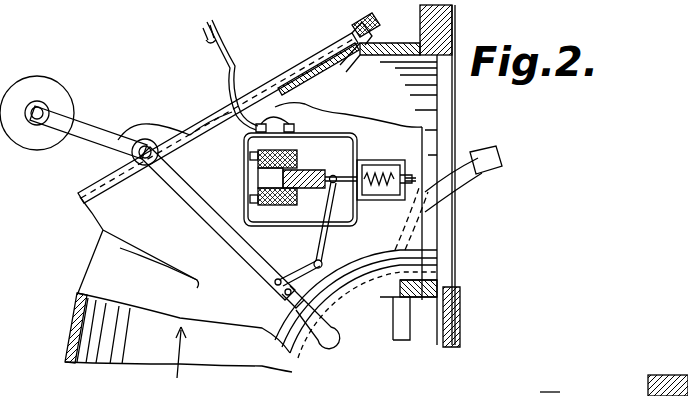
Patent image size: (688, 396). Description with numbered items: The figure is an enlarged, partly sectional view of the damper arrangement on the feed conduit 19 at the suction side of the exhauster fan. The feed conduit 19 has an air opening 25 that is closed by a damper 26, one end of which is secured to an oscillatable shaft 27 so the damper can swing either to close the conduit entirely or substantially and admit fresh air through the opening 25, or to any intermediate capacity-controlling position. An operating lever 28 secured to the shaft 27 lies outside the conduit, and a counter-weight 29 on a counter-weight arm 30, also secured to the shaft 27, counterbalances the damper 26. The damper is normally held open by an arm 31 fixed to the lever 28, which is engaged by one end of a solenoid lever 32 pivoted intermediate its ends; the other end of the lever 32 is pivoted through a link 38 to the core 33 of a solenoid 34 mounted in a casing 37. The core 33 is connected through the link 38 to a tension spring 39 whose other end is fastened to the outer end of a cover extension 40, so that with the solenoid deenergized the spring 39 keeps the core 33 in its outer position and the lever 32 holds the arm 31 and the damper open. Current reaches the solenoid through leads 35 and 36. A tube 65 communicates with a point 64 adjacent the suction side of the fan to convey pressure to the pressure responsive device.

The feed conduit 19 is at (74, 332).
The air opening 25 is at (293, 72).
The damper 26 is at (316, 70).
The oscillatable shaft 27 is at (128, 165).
The operating lever 28 is at (218, 228).
The counter-weight 29 is at (56, 92).
The counter-weight arm 30 is at (103, 130).
The arm 31 is at (302, 265).
The solenoid lever 32 is at (328, 246).
The core 33 is at (310, 189).
The solenoid 34 is at (250, 172).
The lead 35 is at (204, 44).
The lead 36 is at (214, 30).
The casing 37 is at (314, 134).
The link 38 is at (333, 172).
The tension spring 39 is at (373, 164).
The cover extension 40 is at (378, 200).
The point adjacent suction side of exhauster fan 64 is at (500, 160).
The tube 65 is at (395, 316).